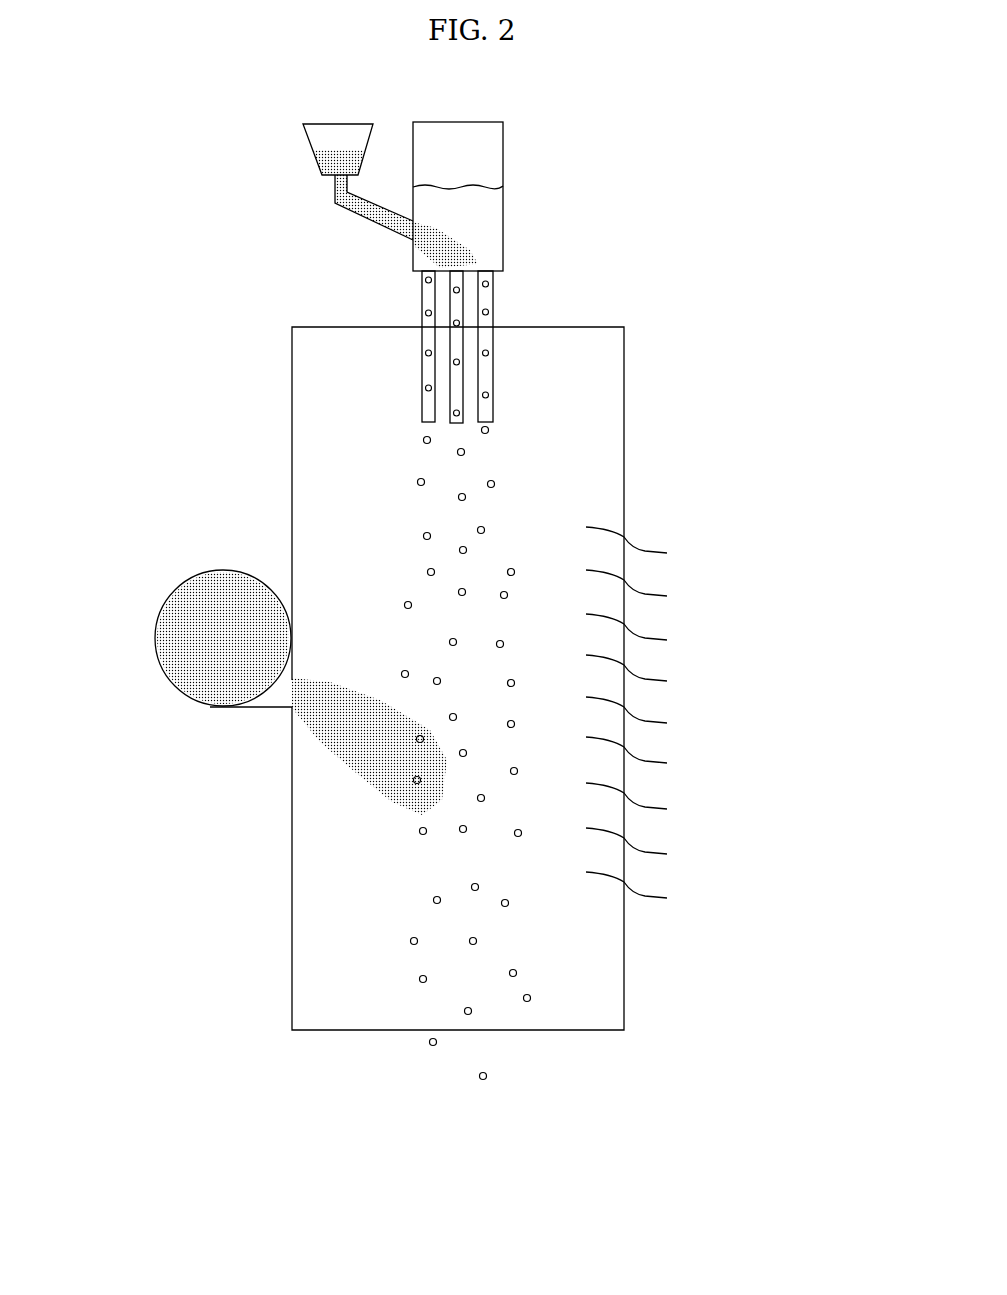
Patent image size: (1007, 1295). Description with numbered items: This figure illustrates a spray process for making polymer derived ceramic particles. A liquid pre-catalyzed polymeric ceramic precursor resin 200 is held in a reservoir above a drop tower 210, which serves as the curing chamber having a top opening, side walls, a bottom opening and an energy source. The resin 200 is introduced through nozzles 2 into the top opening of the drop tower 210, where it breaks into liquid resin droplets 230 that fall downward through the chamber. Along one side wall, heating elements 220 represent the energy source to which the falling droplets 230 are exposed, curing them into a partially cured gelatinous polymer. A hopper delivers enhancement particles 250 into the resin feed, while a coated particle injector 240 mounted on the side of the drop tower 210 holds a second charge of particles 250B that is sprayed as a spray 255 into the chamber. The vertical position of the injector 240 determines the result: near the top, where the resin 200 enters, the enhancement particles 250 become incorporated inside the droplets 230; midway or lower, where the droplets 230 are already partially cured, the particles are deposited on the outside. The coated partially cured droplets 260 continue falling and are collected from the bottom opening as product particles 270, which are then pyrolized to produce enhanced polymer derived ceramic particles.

The nozzles 2 is at (493, 310).
The liquid resin 200 is at (467, 183).
The drop tower 210 is at (282, 378).
The heating elements 220 is at (680, 632).
The liquid resin droplets 230 is at (500, 478).
The coated particle injector 240 is at (180, 570).
The enhancement particles 250 is at (338, 133).
The feed material 250B is at (215, 663).
The spray 255 is at (390, 722).
The coated particles 260 is at (523, 973).
The product particle 270 is at (493, 1083).